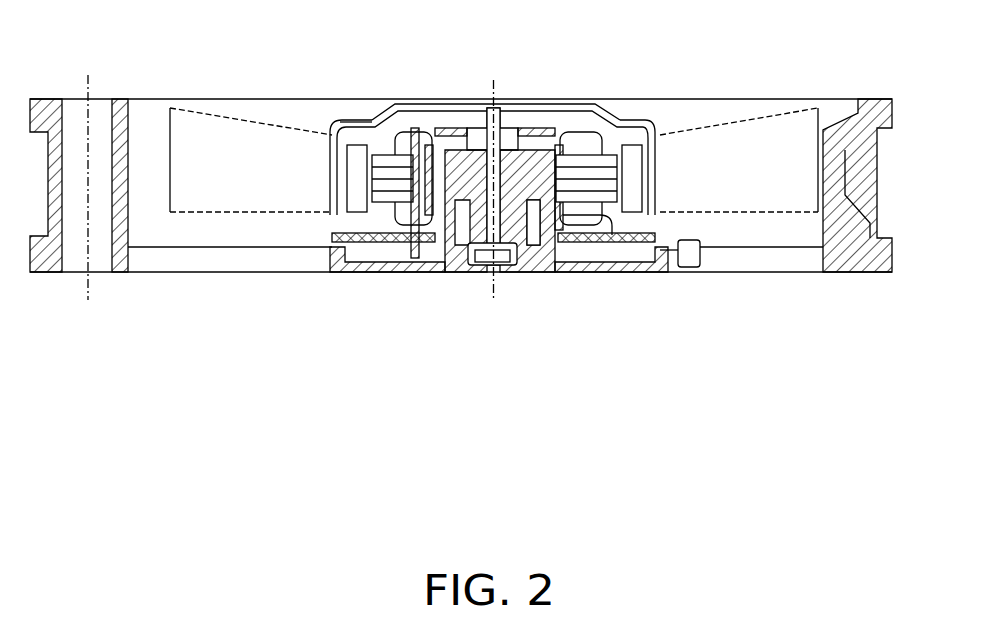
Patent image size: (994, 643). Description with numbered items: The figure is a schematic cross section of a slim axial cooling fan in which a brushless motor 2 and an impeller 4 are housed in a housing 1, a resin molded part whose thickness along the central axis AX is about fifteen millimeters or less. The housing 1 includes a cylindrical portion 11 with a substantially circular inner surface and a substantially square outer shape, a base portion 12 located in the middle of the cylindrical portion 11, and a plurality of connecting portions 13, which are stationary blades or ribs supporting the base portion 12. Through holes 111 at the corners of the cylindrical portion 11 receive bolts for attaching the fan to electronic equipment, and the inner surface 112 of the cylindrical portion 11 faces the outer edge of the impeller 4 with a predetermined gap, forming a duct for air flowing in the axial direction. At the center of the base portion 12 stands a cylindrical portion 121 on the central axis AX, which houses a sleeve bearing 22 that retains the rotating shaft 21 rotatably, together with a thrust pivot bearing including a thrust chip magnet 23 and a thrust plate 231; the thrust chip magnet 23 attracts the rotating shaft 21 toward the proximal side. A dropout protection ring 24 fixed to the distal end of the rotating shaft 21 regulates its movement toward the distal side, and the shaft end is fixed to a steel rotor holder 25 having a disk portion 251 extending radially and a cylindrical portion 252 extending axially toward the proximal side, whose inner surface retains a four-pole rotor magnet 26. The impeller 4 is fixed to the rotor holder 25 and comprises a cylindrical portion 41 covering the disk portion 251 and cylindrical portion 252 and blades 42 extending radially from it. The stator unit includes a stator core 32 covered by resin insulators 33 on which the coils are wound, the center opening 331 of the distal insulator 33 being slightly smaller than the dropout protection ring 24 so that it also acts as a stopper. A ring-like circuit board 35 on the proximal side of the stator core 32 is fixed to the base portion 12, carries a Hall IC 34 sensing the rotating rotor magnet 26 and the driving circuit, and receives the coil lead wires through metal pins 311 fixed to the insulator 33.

The housing 1 is at (898, 108).
The cylindrical portion 11 is at (38, 272).
The through hole 111 is at (100, 272).
The inner surface 112 is at (805, 252).
The base portion 12 is at (548, 232).
The cylindrical portion 121 is at (445, 240).
The connecting portion 13 is at (207, 258).
The brushless motor 2 is at (553, 93).
The rotating shaft 21 is at (499, 250).
The sleeve bearing 22 is at (530, 250).
The thrust chip magnet 23 is at (480, 258).
The thrust plate 231 is at (487, 262).
The dropout protection ring 24 is at (468, 126).
The rotor holder 25 is at (364, 40).
The disk portion 251 is at (440, 103).
The cylindrical portion 252 is at (352, 121).
The rotor magnet 26 is at (357, 203).
The metal pin 311 is at (416, 260).
The stator core 32 is at (594, 155).
The insulator 33 is at (617, 150).
The center opening 331 is at (520, 124).
The Hall IC 34 is at (615, 232).
The circuit board 35 is at (610, 243).
The impeller 4 is at (675, 40).
The cylindrical portion 41 is at (637, 114).
The blade 42 is at (733, 133).
The central axis AX is at (493, 93).